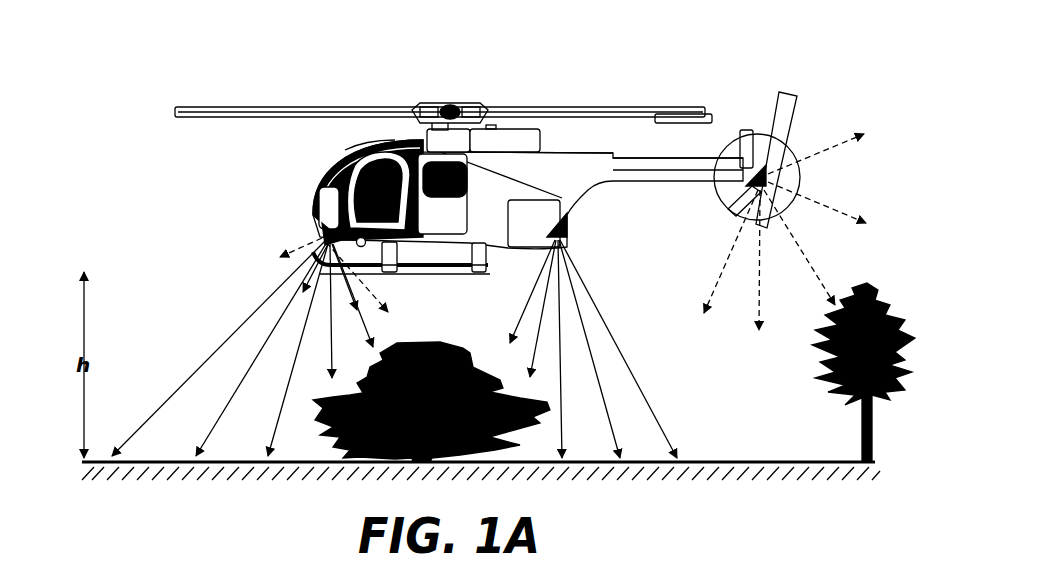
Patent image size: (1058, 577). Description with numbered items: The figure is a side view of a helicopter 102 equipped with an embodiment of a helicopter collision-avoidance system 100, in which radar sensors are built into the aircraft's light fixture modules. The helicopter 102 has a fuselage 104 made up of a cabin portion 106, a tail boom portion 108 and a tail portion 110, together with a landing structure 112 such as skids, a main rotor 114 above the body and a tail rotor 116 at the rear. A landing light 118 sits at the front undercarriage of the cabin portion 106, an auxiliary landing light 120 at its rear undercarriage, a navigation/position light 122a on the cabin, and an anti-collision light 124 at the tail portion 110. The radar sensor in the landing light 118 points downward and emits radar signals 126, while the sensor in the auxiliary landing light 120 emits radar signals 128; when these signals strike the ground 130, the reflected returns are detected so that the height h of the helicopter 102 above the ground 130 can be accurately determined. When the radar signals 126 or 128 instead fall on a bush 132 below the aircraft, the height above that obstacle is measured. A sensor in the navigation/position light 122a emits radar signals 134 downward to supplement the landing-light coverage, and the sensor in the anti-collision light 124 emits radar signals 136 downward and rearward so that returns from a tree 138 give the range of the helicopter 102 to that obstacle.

The helicopter collision-avoidance system 100 is at (170, 139).
The helicopter 102 is at (506, 82).
The fuselage 104 is at (590, 150).
The cabin portion 106 is at (316, 171).
The tail boom portion 108 is at (620, 160).
The tail portion 110 is at (787, 88).
The landing structure 112 is at (478, 270).
The main rotor 114 is at (268, 106).
The tail rotor 116 is at (790, 152).
The landing light 118 is at (322, 232).
The auxiliary landing light 120 is at (567, 229).
The navigation/position light 122a is at (366, 243).
The anti-collision light 124 is at (767, 182).
The radar signals 126 is at (210, 332).
The radar signals 128 is at (604, 298).
The ground 130 is at (738, 460).
The bush 132 is at (340, 410).
The radar signals 134 is at (287, 244).
The radar signals 136 is at (842, 131).
The tree 138 is at (815, 370).